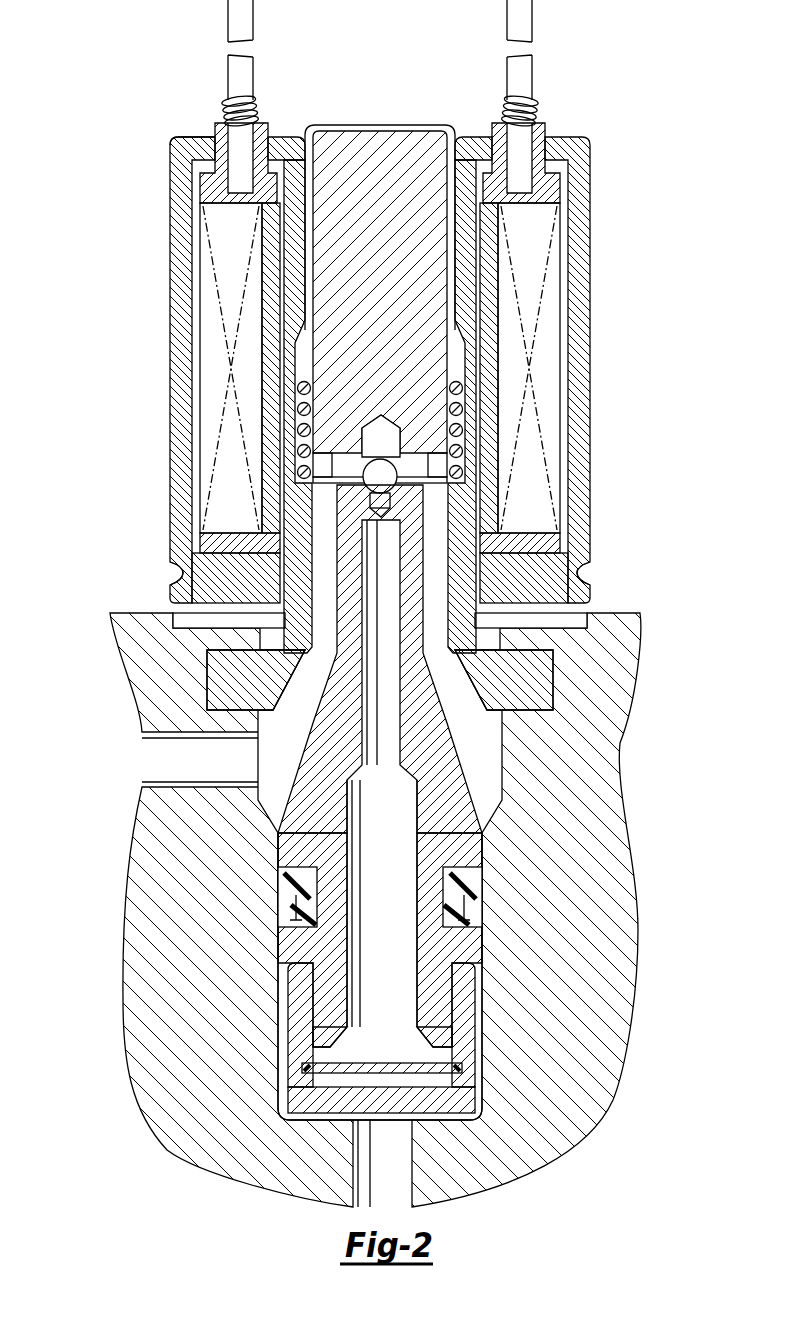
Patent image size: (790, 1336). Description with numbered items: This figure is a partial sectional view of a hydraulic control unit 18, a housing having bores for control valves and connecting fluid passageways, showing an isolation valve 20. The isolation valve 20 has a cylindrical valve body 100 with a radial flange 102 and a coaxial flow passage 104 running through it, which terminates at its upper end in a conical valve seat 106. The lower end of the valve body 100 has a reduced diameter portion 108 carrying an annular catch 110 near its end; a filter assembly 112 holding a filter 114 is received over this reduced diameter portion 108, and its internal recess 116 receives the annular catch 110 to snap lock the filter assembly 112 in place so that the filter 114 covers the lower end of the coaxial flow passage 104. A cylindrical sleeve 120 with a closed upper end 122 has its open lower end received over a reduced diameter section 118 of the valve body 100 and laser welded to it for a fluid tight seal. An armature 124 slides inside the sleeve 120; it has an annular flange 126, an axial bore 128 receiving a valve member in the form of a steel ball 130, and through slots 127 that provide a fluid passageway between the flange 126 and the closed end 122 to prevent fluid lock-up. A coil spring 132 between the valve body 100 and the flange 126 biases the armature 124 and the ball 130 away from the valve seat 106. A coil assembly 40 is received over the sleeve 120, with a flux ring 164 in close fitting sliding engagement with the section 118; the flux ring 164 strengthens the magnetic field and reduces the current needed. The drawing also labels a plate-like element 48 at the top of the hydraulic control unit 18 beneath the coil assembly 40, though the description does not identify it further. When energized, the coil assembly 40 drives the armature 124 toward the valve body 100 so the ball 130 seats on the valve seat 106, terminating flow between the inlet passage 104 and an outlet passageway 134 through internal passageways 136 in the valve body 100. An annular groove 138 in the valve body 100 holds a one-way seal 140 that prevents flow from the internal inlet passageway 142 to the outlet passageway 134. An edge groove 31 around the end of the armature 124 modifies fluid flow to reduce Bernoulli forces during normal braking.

The hydraulic control unit 18 is at (125, 902).
The isolation valve 20 is at (150, 232).
The edge groove 31 is at (452, 479).
The coil assembly 40 is at (593, 142).
The mounting plate 48 is at (207, 665).
The valve body 100 is at (278, 848).
The radial flange 102 is at (207, 685).
The coaxial flow passage 104 is at (396, 820).
The conical valve seat 106 is at (404, 493).
The reduced diameter portion 108 is at (460, 1015).
The annular catch 110 is at (463, 1047).
The filter assembly 112 is at (288, 995).
The filter 114 is at (330, 1068).
The internal recess 116 is at (320, 1033).
The reduced diameter section 118 is at (298, 520).
The cylindrical sleeve 120 is at (486, 290).
The closed upper end 122 is at (379, 126).
The armature 124 is at (416, 147).
The annular flange 126 is at (300, 372).
The through slots 127 is at (300, 362).
The axial bore 128 is at (403, 440).
The ball 130 is at (370, 458).
The coil spring 132 is at (453, 383).
The outlet passageway 134 is at (160, 782).
The internal passageways 136 is at (330, 585).
The annular groove 138 is at (445, 880).
The one-way seal 140 is at (300, 910).
The internal inlet passageway 142 is at (395, 1185).
The flux ring 164 is at (573, 560).